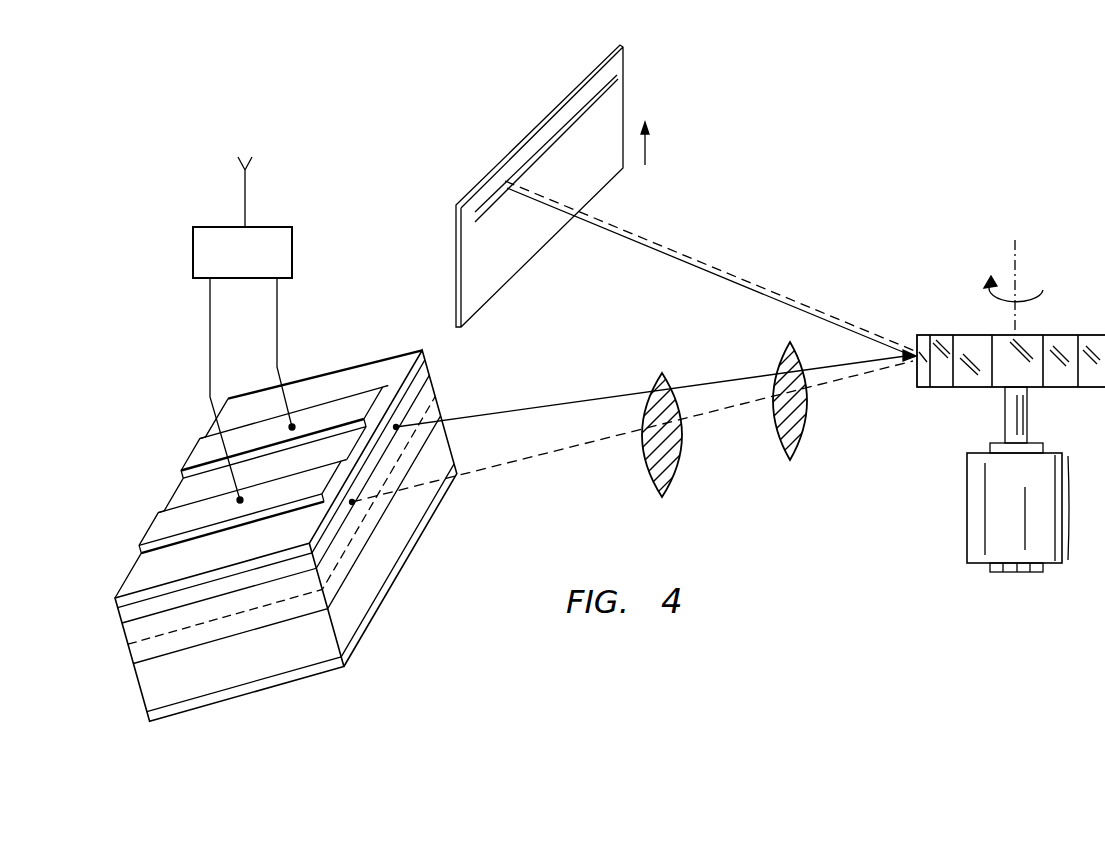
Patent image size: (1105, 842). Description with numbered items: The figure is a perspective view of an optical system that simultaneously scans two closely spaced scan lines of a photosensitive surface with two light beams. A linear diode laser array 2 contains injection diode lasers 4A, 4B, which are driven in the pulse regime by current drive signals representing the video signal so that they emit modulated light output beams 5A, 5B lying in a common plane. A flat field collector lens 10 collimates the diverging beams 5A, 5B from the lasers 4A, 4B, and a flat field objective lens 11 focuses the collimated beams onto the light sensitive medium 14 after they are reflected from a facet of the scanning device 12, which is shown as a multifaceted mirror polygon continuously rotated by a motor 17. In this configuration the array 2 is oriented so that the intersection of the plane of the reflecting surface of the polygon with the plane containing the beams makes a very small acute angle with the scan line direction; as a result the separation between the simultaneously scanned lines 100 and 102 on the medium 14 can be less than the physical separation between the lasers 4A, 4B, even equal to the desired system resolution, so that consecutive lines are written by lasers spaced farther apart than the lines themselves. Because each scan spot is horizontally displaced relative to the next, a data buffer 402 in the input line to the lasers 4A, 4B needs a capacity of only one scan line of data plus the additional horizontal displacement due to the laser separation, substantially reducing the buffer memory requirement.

The linear diode laser array 2 is at (307, 514).
The injection diode laser 4A is at (352, 502).
The injection diode laser 4B is at (396, 427).
The modulated light output beam 5A is at (563, 453).
The modulated light output beam 5B is at (563, 402).
The flat field collector lens 10 is at (680, 462).
The flat field objective lens 11 is at (808, 420).
The scanning device 12 is at (1067, 335).
The light sensitive medium 14 is at (565, 186).
The motor 17 is at (993, 477).
The scan line 100 is at (592, 95).
The scan line 102 is at (582, 116).
The data buffer 402 is at (292, 253).